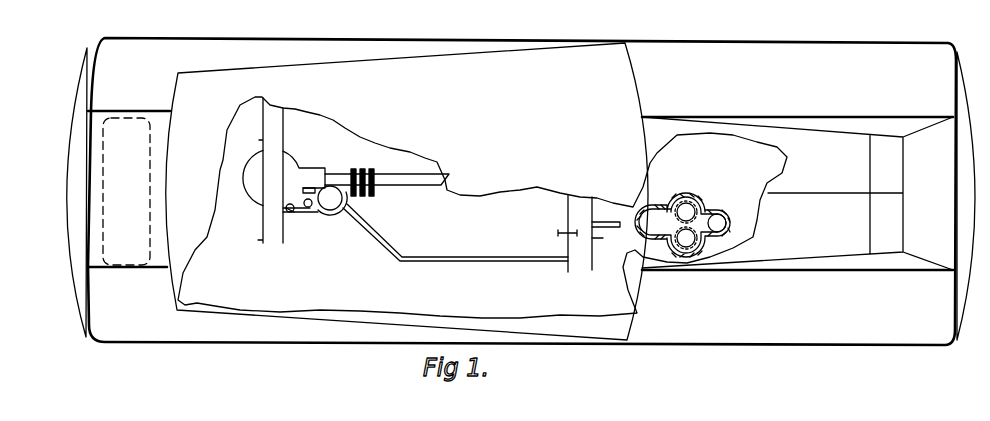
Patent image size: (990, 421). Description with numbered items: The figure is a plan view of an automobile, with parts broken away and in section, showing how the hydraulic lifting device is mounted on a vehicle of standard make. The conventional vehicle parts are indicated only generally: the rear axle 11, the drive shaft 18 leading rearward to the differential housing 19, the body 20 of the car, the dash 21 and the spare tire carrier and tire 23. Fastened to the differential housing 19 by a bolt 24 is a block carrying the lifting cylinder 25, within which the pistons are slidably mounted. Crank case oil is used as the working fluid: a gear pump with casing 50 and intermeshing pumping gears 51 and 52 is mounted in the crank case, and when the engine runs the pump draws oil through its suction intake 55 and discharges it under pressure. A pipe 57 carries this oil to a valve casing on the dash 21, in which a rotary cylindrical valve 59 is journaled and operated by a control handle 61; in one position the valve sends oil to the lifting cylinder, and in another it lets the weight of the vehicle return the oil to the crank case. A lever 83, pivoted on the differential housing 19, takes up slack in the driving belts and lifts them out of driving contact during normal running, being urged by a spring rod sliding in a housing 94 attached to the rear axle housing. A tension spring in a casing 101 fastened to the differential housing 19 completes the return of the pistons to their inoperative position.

The rear axle 11 is at (292, 216).
The drive shaft 18 is at (435, 190).
The differential housing 19 is at (292, 213).
The body 20 is at (482, 319).
The dash 21 is at (580, 270).
The spare tire carrier and tire 23 is at (137, 222).
The bolt 24 is at (327, 210).
The cylinder 25 is at (337, 212).
The casing 50 is at (658, 207).
The pumping gear 51 is at (695, 203).
The pumping gear 52 is at (708, 215).
The suction intake 55 is at (733, 212).
The pipe 57 is at (610, 232).
The rotary cylindrical valve 59 is at (166, 411).
The control handle 61 is at (560, 240).
The lever 83 is at (347, 213).
The housing 94 is at (289, 213).
The casing 101 is at (309, 207).